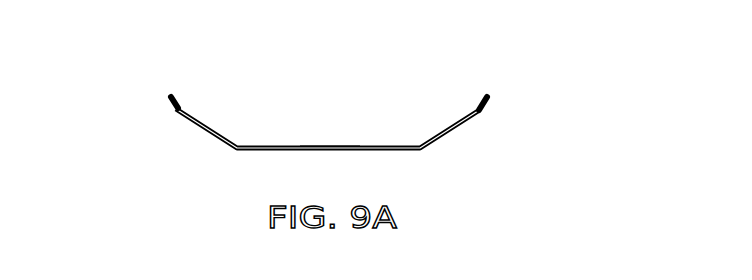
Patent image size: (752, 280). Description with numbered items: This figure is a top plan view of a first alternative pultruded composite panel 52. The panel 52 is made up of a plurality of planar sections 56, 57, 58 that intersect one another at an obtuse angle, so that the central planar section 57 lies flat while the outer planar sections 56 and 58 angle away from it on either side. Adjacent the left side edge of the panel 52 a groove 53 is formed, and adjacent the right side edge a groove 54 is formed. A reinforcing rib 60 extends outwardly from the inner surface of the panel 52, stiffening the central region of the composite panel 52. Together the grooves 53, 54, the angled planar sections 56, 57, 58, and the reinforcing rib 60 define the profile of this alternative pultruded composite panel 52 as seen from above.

The first alternative pultruded composite panel 52 is at (369, 140).
The groove 53 is at (172, 98).
The groove 54 is at (488, 97).
The planar section 56 is at (203, 130).
The planar section 57 is at (317, 150).
The planar section 58 is at (448, 132).
The reinforcing rib 60 is at (328, 140).